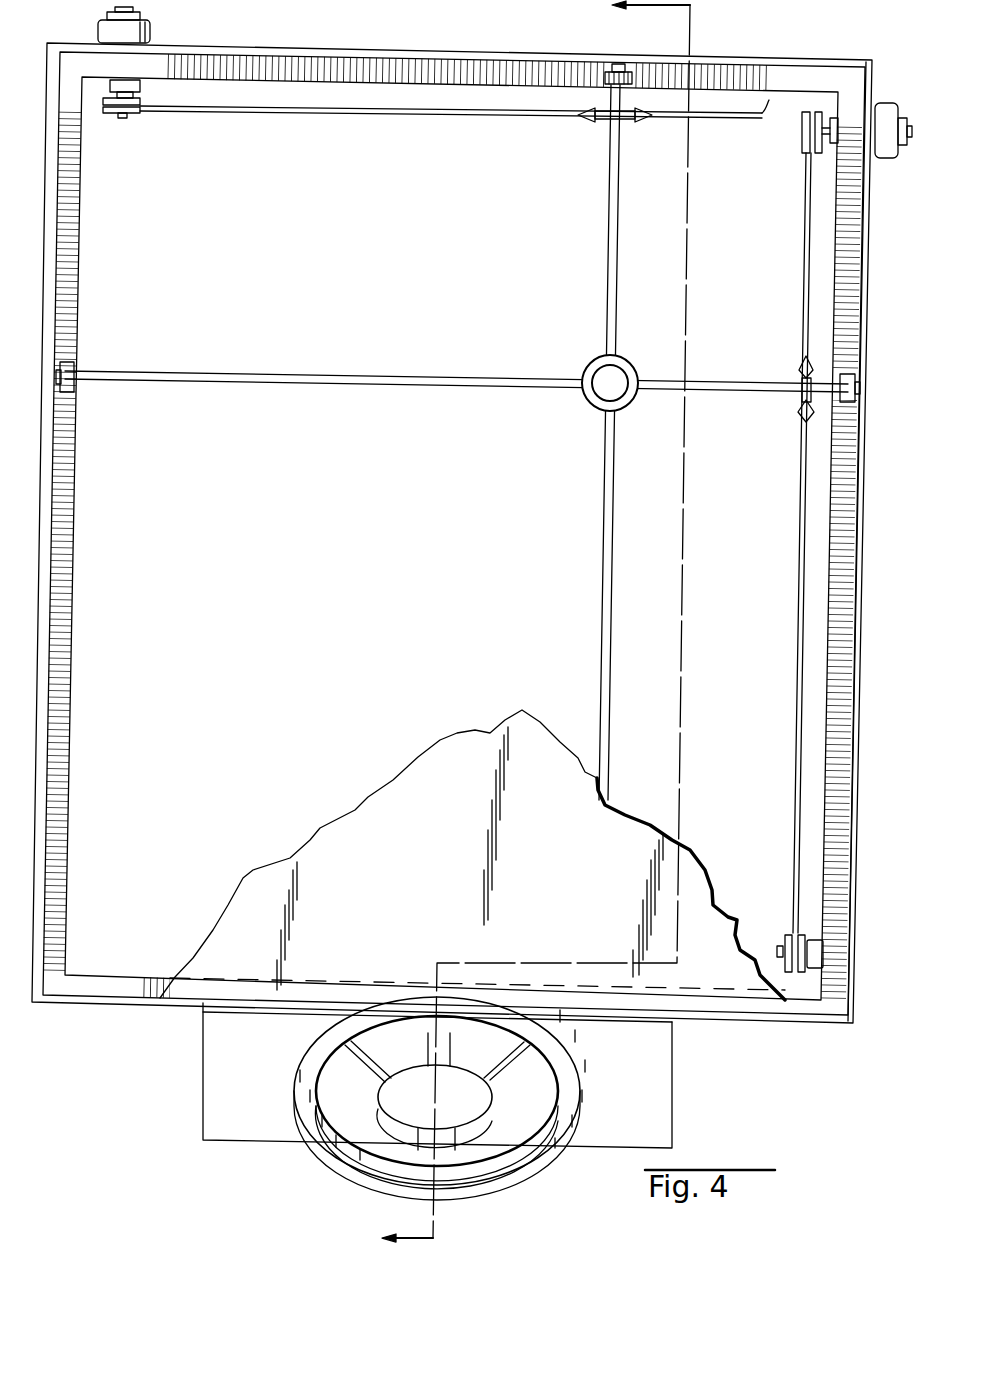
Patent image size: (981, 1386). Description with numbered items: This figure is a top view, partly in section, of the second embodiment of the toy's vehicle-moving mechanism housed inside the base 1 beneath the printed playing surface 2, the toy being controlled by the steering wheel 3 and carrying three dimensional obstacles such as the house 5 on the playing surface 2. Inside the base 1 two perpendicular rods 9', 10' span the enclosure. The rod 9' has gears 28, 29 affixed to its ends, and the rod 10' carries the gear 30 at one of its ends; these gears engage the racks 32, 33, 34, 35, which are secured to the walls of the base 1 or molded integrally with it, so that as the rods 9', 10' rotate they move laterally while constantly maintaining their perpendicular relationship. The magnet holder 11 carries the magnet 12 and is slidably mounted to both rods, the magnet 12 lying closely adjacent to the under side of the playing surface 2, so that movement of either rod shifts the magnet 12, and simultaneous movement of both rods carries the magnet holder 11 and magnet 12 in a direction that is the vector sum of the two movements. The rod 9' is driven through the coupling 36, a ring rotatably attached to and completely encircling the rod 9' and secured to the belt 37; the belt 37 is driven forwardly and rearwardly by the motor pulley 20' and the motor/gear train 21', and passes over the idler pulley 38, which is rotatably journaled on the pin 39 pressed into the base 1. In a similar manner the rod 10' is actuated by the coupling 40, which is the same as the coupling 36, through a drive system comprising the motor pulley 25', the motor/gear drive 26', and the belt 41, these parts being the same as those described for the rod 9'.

The base 1 is at (860, 852).
The printed playing surface 2 is at (418, 778).
The steering wheel 3 is at (580, 1068).
The house 5 is at (524, 626).
The rod 9' is at (456, 352).
The rod 10' is at (639, 442).
The magnet holder 11 is at (633, 402).
The magnet 12 is at (616, 378).
The motor pulley 20' is at (786, 143).
The motor/gear train 21' is at (907, 155).
The motor pulley 25' is at (143, 116).
The motor/gear drive 26' is at (160, 21).
The gear 28 is at (68, 366).
The gear 29 is at (848, 378).
The gear 30 is at (625, 70).
The rack 32 is at (73, 452).
The rack 33 is at (848, 452).
The rack 34 is at (712, 72).
The rack 35 is at (152, 995).
The coupling 36 is at (800, 372).
The belt 37 is at (800, 508).
The idler pulley 38 is at (787, 932).
The pin 39 is at (778, 948).
The coupling 40 is at (595, 120).
The belt 41 is at (335, 117).